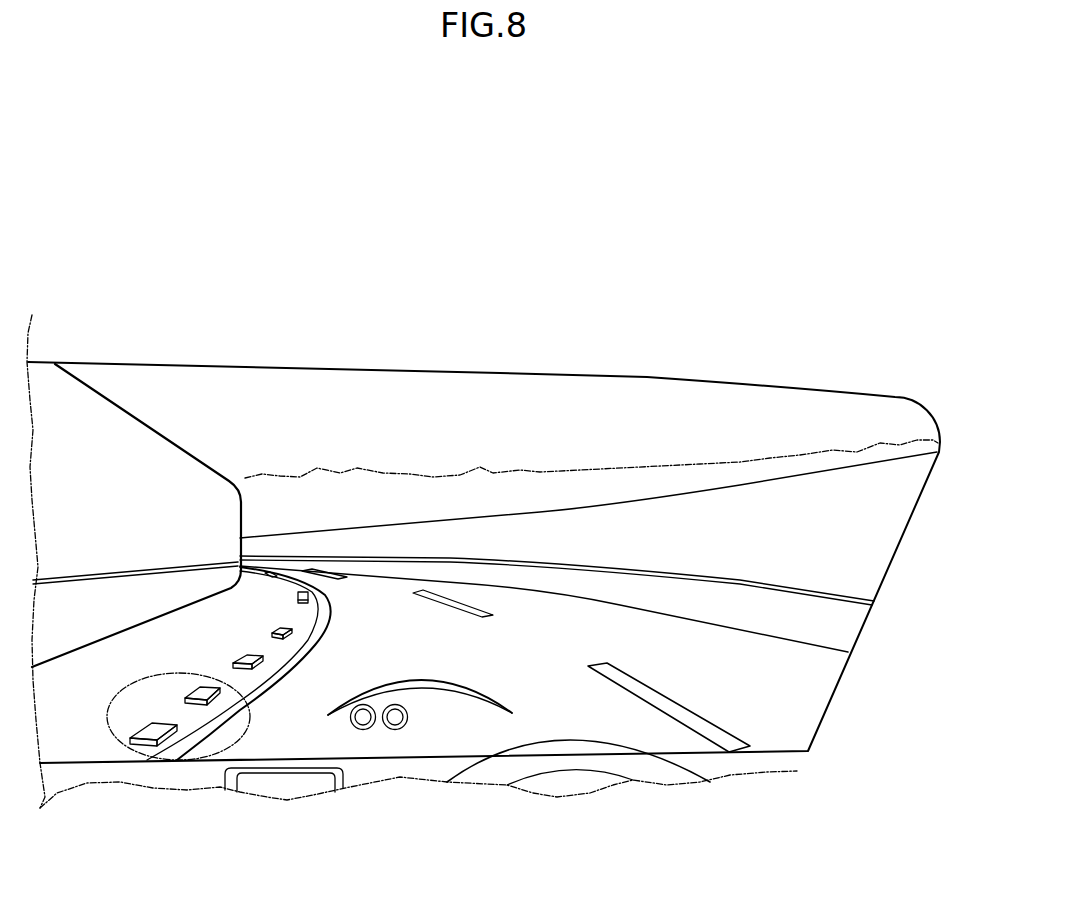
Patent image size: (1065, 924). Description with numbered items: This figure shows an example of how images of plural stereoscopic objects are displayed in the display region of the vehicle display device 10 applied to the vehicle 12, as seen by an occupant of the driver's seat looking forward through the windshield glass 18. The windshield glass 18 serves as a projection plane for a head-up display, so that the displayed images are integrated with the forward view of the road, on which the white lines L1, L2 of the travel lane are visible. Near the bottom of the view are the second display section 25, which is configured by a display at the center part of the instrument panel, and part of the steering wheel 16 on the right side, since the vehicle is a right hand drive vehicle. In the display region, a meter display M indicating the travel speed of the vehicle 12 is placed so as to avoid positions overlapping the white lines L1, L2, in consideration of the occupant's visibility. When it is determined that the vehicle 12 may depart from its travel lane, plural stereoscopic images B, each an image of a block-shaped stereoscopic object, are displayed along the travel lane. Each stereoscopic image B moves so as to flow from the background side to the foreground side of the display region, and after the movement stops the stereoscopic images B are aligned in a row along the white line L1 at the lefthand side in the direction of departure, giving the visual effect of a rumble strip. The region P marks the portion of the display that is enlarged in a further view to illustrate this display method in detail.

The vehicle display device 10 is at (365, 298).
The vehicle 12 is at (402, 248).
The windshield glass 18 is at (647, 377).
The steering wheel 16 is at (693, 765).
The second display section 25 is at (282, 790).
The white line L1 is at (328, 606).
The white line L2 is at (652, 694).
The meter display M is at (430, 677).
The stereoscopic image B is at (138, 732).
The region P is at (113, 728).